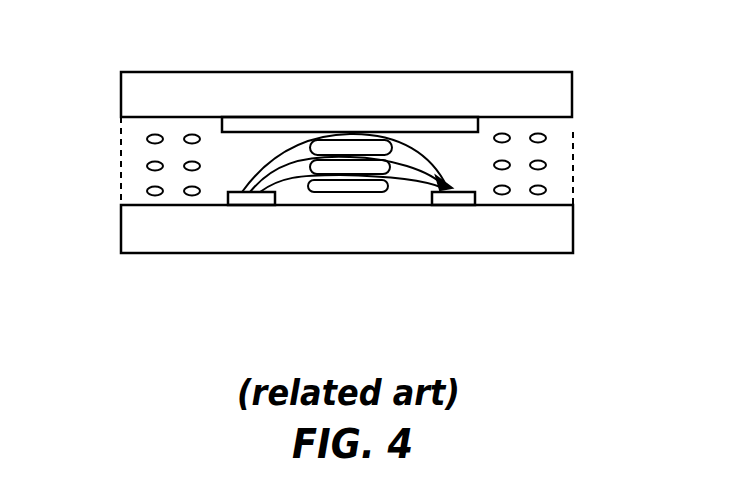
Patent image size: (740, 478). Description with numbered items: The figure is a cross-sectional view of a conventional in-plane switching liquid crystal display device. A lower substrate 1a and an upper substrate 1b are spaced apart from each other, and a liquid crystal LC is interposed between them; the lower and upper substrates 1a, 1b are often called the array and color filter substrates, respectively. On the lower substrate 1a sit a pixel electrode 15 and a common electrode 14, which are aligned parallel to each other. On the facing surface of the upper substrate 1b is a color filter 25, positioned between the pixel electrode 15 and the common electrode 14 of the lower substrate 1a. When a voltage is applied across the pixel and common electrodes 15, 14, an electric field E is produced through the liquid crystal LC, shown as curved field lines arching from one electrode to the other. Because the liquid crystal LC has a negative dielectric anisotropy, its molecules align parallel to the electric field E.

The lower substrate 1a is at (485, 242).
The upper substrate 1b is at (297, 85).
The color filter 25 is at (248, 128).
The pixel electrode 15 is at (242, 205).
The common electrode 14 is at (452, 205).
The liquid crystal LC is at (337, 192).
The electric field E is at (425, 156).